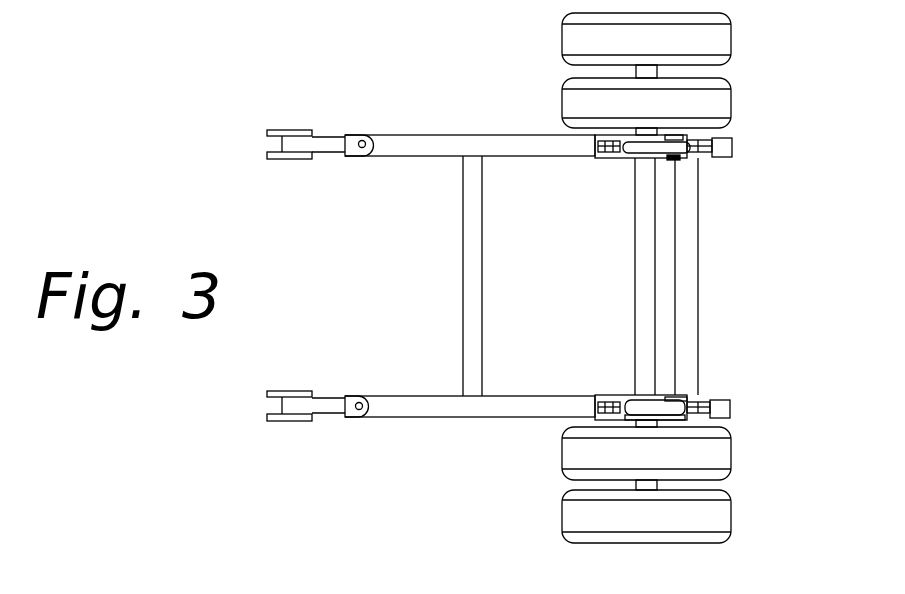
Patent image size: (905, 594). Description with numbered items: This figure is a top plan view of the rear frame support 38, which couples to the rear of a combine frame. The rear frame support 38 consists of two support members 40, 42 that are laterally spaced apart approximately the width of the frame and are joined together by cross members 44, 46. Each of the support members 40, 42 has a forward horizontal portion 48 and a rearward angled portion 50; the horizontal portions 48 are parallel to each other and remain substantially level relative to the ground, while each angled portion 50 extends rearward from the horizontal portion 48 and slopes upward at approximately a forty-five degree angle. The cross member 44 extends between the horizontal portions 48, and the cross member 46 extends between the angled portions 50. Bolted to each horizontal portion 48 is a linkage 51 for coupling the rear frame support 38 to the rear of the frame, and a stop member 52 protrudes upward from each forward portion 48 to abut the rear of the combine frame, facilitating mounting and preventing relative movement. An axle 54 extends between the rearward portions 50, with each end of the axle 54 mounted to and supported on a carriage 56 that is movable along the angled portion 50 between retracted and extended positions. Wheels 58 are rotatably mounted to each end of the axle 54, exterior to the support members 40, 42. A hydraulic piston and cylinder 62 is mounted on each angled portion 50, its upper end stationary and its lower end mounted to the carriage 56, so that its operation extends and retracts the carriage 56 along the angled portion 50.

The rear frame support 38 is at (768, 122).
The support member 40 is at (448, 136).
The support member 42 is at (409, 418).
The cross member 44 is at (475, 240).
The cross member 46 is at (690, 280).
The horizontal portion 48 is at (385, 141).
The angled portion 50 is at (735, 147).
The linkage 51 is at (277, 423).
The stop member 52 is at (358, 416).
The axle 54 is at (640, 272).
The carriage 56 is at (613, 393).
The wheels 58 is at (718, 38).
The hydraulic piston and cylinder 62 is at (655, 408).